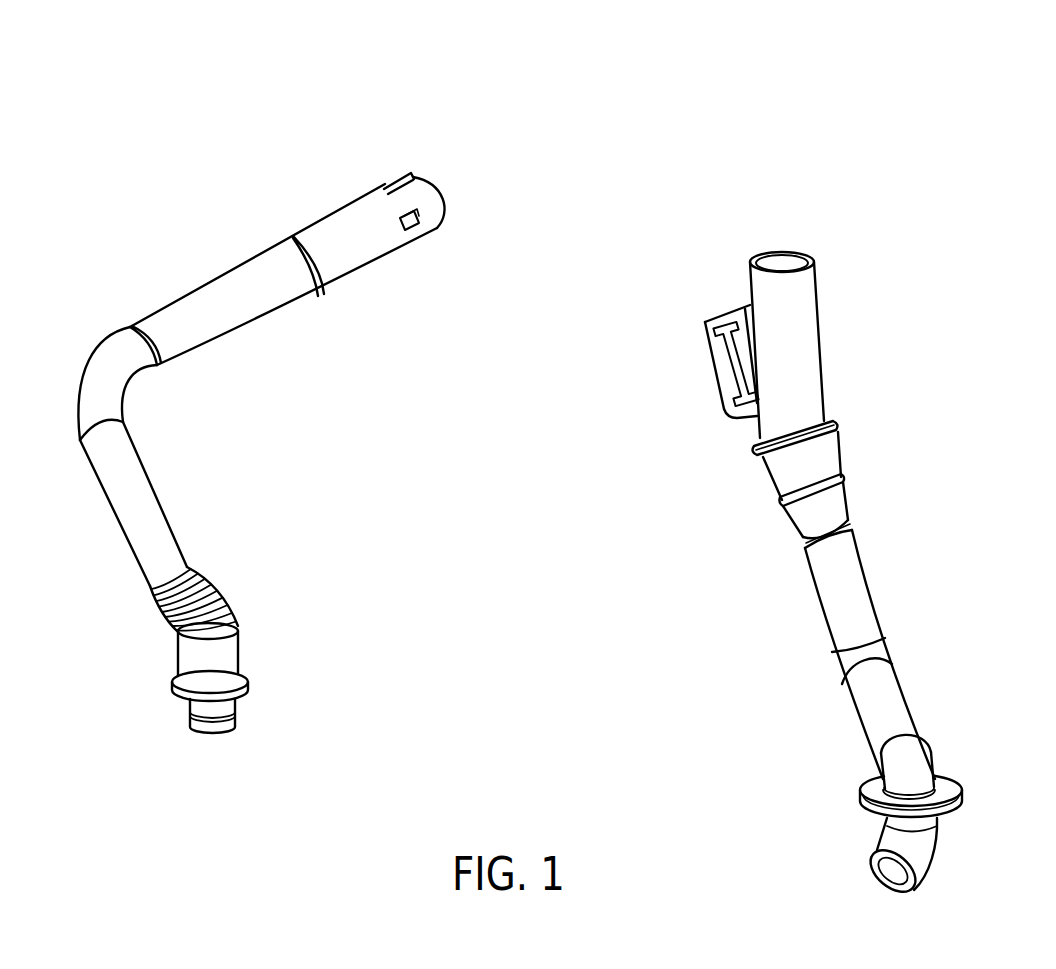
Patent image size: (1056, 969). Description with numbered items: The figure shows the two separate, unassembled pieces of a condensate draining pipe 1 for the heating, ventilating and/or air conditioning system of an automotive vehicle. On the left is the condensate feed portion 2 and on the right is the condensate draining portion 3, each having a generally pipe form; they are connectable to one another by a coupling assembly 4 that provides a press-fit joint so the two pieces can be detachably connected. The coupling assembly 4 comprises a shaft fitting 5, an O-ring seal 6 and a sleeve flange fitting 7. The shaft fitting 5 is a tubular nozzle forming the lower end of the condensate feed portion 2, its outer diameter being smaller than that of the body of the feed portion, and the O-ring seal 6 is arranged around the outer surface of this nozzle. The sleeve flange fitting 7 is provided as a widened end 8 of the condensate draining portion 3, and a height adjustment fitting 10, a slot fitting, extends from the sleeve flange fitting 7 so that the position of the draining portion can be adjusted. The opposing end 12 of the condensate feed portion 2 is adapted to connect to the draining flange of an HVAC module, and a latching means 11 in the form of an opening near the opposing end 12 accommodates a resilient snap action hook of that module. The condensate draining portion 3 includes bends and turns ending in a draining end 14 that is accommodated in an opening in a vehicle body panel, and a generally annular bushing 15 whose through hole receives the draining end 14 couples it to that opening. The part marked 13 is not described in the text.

The condensate draining pipe 1 is at (809, 91).
The condensate feed portion 2 is at (110, 498).
The condensate draining portion 3 is at (860, 595).
The coupling assembly 4 is at (166, 686).
The shaft fitting 5 is at (230, 720).
The O-ring seal 6 is at (233, 705).
The sleeve flange fitting 7 is at (810, 343).
The widened end 8 is at (780, 262).
The height adjustment fitting 10 is at (728, 329).
The latching means 11 is at (410, 232).
The opposing end 12 is at (335, 219).
The connector 13 is at (230, 653).
The draining end 14 is at (923, 760).
The bushing 15 is at (955, 793).